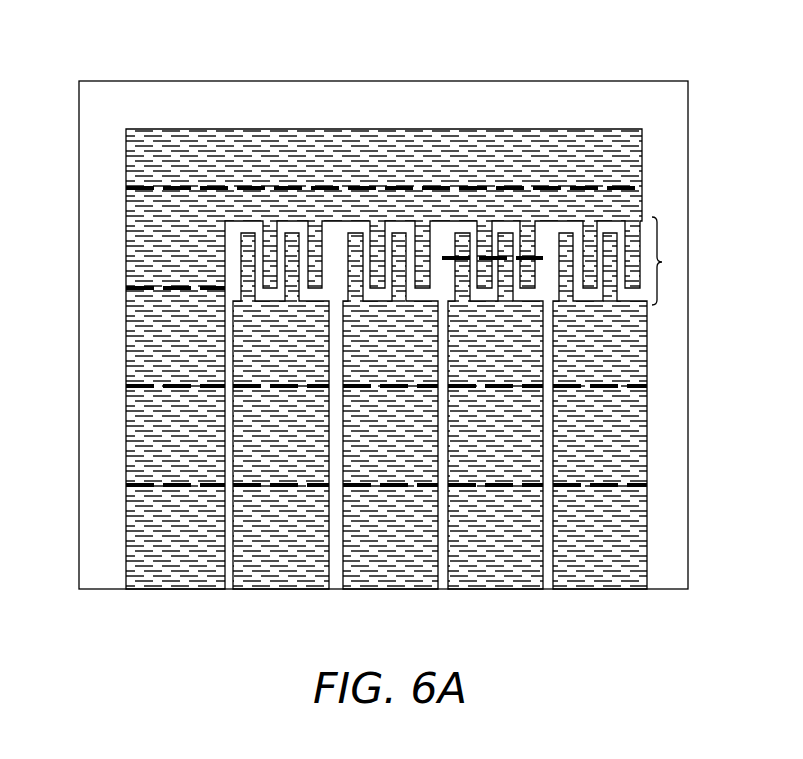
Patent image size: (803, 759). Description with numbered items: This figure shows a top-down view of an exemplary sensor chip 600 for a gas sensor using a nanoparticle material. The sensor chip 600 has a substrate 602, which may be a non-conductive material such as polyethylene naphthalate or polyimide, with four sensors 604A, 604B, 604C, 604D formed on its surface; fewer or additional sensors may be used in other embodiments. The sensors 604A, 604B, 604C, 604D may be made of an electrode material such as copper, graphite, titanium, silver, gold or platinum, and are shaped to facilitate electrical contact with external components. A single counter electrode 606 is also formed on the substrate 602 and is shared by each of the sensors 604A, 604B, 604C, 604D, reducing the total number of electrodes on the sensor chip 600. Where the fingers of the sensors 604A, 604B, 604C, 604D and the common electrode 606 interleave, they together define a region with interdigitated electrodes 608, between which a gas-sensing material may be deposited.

The sensor chip 600 is at (256, 51).
The substrate 602 is at (627, 95).
The sensor 604A is at (282, 562).
The sensor 604B is at (393, 562).
The sensor 604C is at (498, 562).
The sensor 604D is at (590, 562).
The counter electrode 606 is at (127, 430).
The interdigitated electrodes 608 is at (662, 262).